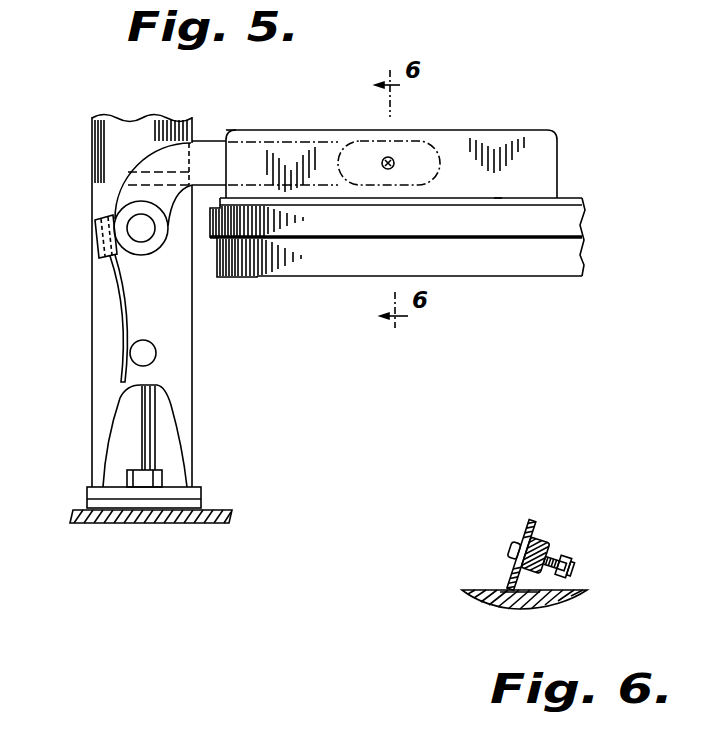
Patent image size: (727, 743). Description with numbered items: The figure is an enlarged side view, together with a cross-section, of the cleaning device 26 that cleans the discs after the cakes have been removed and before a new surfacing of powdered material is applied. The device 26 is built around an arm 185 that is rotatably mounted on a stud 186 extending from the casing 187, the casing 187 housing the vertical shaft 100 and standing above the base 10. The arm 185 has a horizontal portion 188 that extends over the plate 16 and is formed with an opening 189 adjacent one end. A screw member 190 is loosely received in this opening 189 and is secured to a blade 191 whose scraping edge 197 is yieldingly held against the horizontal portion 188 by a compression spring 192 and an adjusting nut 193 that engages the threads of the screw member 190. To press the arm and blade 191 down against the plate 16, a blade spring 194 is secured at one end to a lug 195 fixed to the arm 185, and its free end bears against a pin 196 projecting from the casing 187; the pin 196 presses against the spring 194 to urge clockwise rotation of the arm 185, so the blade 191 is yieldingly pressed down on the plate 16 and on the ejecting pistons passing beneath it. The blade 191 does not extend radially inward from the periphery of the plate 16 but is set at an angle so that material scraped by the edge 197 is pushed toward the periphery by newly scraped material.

In FIG. 5, the base 10 is at (72, 517).
In FIG. 5, the plate 16 is at (350, 260).
In FIG. 6, the plate 16 is at (504, 606).
In FIG. 5, the device 26 is at (258, 117).
In FIG. 5, the shaft 100 is at (140, 442).
In FIG. 5, the arm 185 is at (158, 163).
In FIG. 5, the stud 186 is at (134, 234).
In FIG. 5, the casing 187 is at (101, 331).
In FIG. 5, the horizontal portion 188 is at (323, 141).
In FIG. 6, the horizontal portion 188 is at (547, 533).
In FIG. 5, the opening 189 is at (392, 160).
In FIG. 6, the opening 189 is at (551, 547).
In FIG. 6, the screw member 190 is at (570, 572).
In FIG. 5, the blade 191 is at (535, 173).
In FIG. 6, the blade 191 is at (506, 586).
In FIG. 6, the compression spring 192 is at (554, 557).
In FIG. 6, the adjusting nut 193 is at (576, 558).
In FIG. 5, the blade spring 194 is at (123, 334).
In FIG. 5, the lug 195 is at (96, 238).
In FIG. 5, the pin 196 is at (150, 355).
In FIG. 5, the scraping edge 197 is at (499, 195).
In FIG. 6, the scraping edge 197 is at (525, 600).